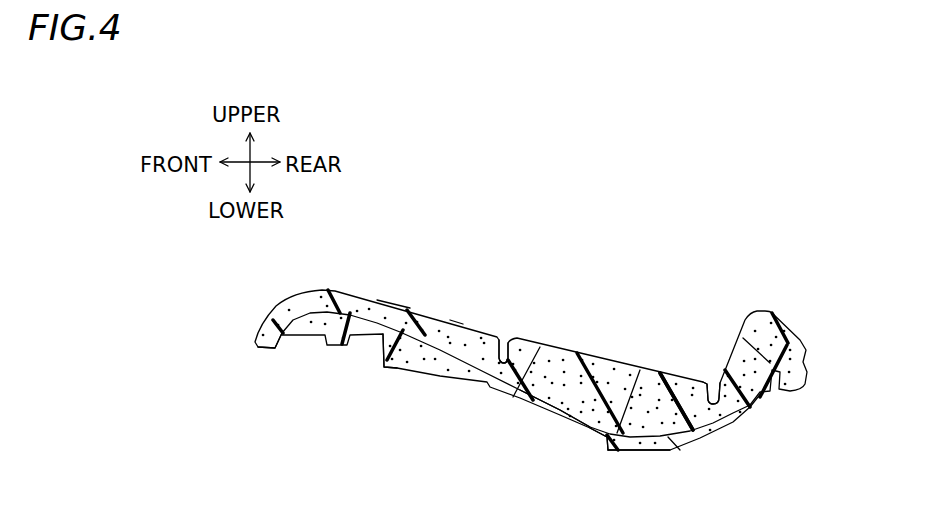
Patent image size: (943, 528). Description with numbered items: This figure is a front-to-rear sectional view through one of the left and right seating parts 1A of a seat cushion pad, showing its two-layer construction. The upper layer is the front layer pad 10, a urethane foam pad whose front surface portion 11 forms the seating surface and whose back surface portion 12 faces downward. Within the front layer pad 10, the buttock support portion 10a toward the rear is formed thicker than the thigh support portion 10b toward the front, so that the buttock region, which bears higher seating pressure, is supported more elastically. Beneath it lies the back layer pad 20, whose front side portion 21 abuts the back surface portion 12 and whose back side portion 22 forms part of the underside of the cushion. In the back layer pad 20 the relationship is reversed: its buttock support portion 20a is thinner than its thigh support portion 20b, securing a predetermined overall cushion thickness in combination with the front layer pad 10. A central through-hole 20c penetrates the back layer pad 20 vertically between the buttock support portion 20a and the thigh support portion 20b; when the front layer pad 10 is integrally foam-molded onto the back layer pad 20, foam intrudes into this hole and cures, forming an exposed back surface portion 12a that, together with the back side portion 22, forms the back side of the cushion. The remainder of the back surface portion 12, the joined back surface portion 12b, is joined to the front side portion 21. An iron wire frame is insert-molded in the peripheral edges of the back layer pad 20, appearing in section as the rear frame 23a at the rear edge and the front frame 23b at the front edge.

The front layer pad 10 is at (333, 286).
The buttock support portion 10a is at (608, 357).
The thigh support portion 10b is at (393, 303).
The front surface portion 11 is at (574, 350).
The back surface portion 12 is at (497, 336).
The exposed back surface portion 12a is at (548, 412).
The joined back surface portion 12b is at (691, 425).
The seating part 1A is at (540, 347).
The back layer pad 20 is at (429, 376).
The buttock support portion 20a is at (645, 433).
The thigh support portion 20b is at (457, 325).
The central through-hole 20c is at (603, 442).
The front side portion 21 is at (383, 366).
The back side portion 22 is at (651, 452).
The rear frame 23a is at (794, 354).
The front frame 23b is at (308, 325).